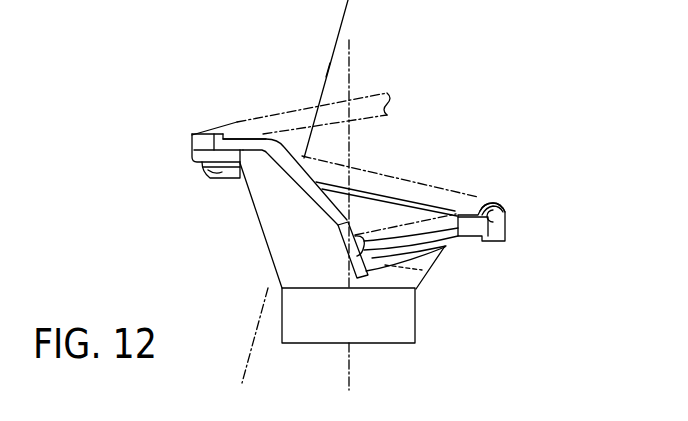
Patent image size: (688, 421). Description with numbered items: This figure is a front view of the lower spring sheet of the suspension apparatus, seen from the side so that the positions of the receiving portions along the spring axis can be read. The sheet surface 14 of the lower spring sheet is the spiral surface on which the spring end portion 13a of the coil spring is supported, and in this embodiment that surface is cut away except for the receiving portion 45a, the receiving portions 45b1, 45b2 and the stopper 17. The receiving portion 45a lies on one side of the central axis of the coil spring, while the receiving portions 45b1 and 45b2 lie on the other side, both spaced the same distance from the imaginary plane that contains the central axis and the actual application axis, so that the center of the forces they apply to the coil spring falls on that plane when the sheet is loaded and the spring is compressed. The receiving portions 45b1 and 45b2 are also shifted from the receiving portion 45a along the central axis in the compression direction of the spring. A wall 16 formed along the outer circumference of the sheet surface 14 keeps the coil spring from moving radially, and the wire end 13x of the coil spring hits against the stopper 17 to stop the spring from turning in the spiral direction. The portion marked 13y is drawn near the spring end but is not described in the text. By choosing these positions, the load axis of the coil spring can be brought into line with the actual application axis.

The spring end portion 13a is at (428, 183).
The wire end 13x is at (424, 272).
The plate end portion 13y is at (474, 204).
The sheet surface 14 is at (264, 140).
The wall 16 is at (203, 143).
The stopper 17 is at (348, 253).
The receiving portion 45a is at (507, 210).
The receiving portion 45b1 is at (221, 170).
The receiving portion 45b2 is at (241, 138).